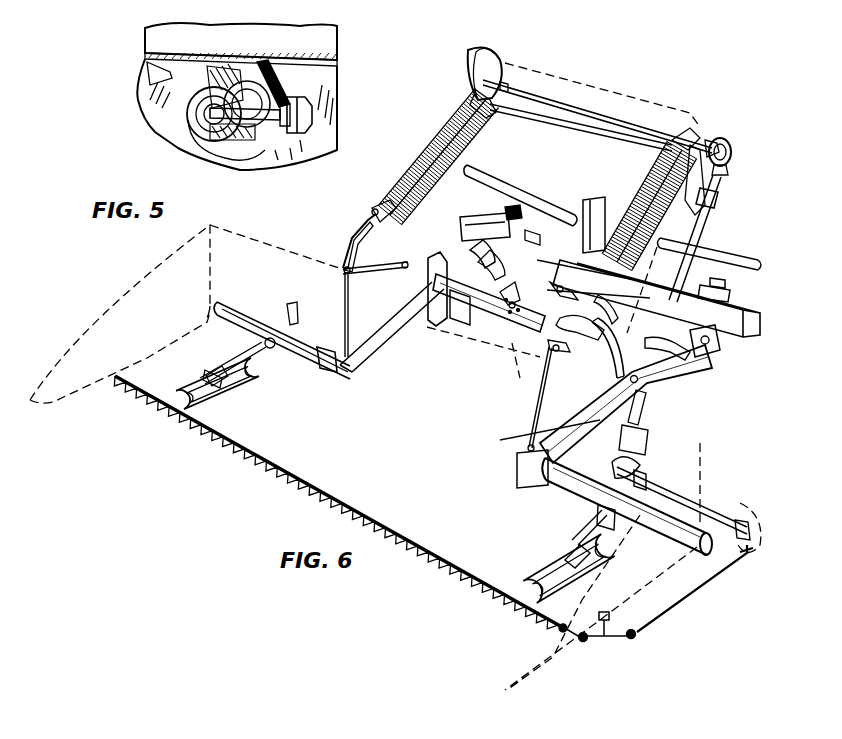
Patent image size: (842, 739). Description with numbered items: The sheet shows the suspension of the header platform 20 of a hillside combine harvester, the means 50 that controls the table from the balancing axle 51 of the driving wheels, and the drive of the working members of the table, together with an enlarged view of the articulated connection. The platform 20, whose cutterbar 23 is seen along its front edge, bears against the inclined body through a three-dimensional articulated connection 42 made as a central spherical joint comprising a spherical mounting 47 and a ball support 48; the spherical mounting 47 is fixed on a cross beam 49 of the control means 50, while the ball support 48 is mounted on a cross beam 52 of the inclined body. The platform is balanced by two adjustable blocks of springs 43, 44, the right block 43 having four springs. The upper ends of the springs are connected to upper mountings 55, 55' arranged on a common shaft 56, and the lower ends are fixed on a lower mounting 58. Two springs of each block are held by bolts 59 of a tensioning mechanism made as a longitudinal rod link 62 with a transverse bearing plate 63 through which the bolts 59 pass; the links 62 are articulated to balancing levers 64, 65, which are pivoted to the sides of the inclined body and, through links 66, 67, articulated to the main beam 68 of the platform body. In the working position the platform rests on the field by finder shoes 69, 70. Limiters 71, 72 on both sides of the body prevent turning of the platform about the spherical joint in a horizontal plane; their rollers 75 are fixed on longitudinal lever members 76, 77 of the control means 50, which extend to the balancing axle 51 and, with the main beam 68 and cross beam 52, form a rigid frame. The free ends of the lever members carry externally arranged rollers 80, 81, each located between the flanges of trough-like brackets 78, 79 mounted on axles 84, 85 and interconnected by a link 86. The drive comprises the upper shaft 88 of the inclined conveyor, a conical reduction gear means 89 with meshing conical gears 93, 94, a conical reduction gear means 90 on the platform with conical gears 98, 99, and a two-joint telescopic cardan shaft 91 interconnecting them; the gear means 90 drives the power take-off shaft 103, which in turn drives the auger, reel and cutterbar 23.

In FIG. 6, the platform 20 is at (222, 425).
In FIG. 6, the cutterbar 23 is at (237, 458).
In FIG. 5, the three-dimensional articulated connection 42 is at (263, 167).
In FIG. 6, the three-dimensional articulated connection 42 is at (512, 343).
In FIG. 6, the right block of springs 43 is at (417, 160).
In FIG. 6, the block of springs 44 is at (627, 187).
In FIG. 5, the spherical mounting 47 is at (202, 152).
In FIG. 5, the ball support 48 is at (183, 132).
In FIG. 5, the cross beam 49 is at (338, 105).
In FIG. 6, the cross beam 49 is at (453, 327).
In FIG. 6, the means that controls the table 50 is at (623, 422).
In FIG. 6, the balancing axle 51 is at (753, 308).
In FIG. 5, the cross beam 52 is at (330, 49).
In FIG. 6, the cross beam 52 is at (483, 300).
In FIG. 6, the upper mounting 55 is at (571, 120).
In FIG. 6, the upper mounting 55' is at (697, 127).
In FIG. 6, the common shaft 56 is at (567, 130).
In FIG. 6, the lower mounting 58 is at (387, 203).
In FIG. 6, the bolts 59 is at (373, 204).
In FIG. 6, the longitudinal rod link 62 is at (360, 221).
In FIG. 6, the transverse bearing plate 63 is at (391, 270).
In FIG. 6, the balancing lever 64 is at (346, 256).
In FIG. 6, the balancing lever 65 is at (560, 353).
In FIG. 6, the link 66 is at (349, 305).
In FIG. 6, the link 67 is at (527, 407).
In FIG. 6, the main beam 68 is at (238, 307).
In FIG. 6, the finder shoe 69 is at (185, 405).
In FIG. 6, the finder shoe 70 is at (523, 603).
In FIG. 6, the limiter 71 is at (580, 367).
In FIG. 6, the limiter 72 is at (428, 327).
In FIG. 6, the roller 75 is at (647, 385).
In FIG. 6, the longitudinal lever member 76 is at (328, 346).
In FIG. 6, the longitudinal lever member 77 is at (640, 398).
In FIG. 6, the trough-like bracket 78 is at (467, 245).
In FIG. 6, the trough-like bracket 79 is at (705, 368).
In FIG. 6, the roller 80 is at (497, 260).
In FIG. 6, the roller 81 is at (706, 345).
In FIG. 6, the axle 84 is at (512, 207).
In FIG. 6, the axle 85 is at (717, 287).
In FIG. 6, the link 86 is at (533, 237).
In FIG. 6, the upper shaft 88 is at (603, 113).
In FIG. 6, the conical reduction gear means 89 is at (732, 155).
In FIG. 6, the conical reduction gear means 90 is at (643, 458).
In FIG. 6, the two-joint telescopic cardan shaft 91 is at (703, 230).
In FIG. 6, the conical gear 93 is at (733, 139).
In FIG. 6, the conical gear 94 is at (731, 173).
In FIG. 6, the conical gear 98 is at (632, 452).
In FIG. 6, the conical gear 99 is at (630, 462).
In FIG. 6, the power take-off shaft 103 is at (736, 520).